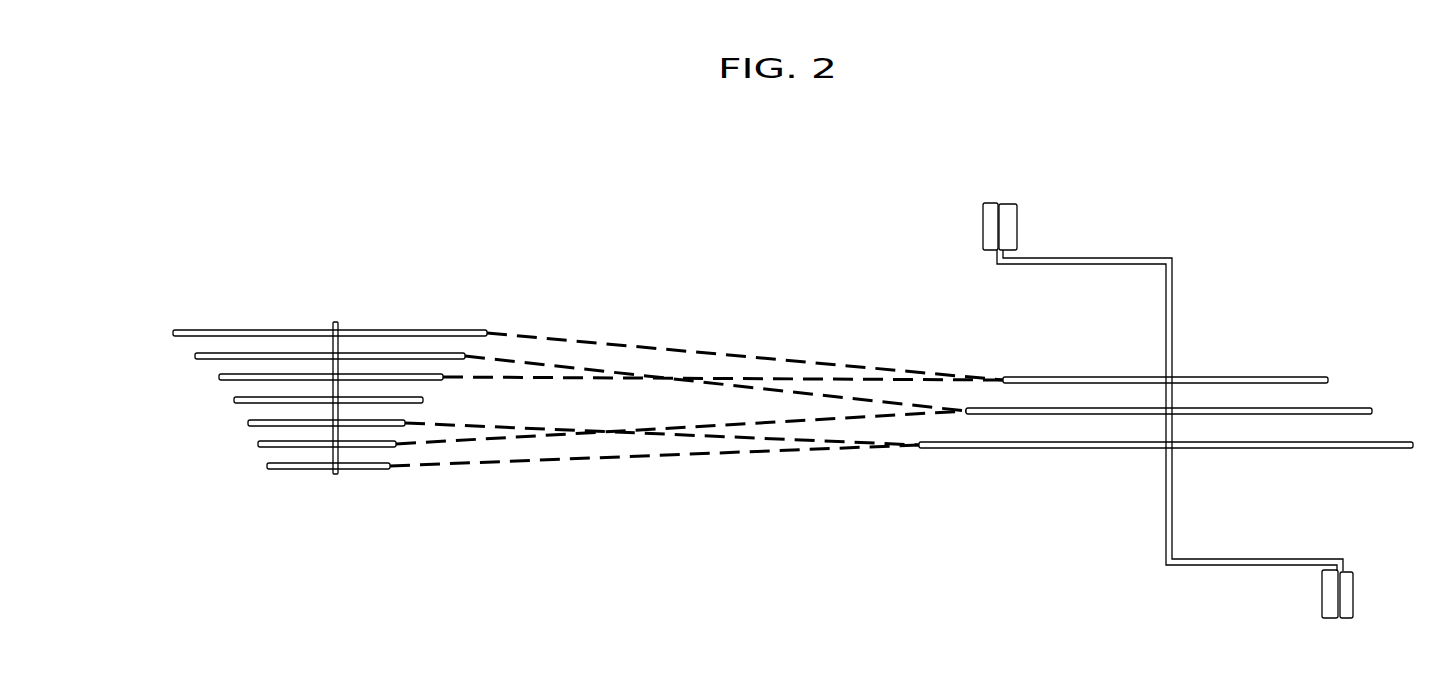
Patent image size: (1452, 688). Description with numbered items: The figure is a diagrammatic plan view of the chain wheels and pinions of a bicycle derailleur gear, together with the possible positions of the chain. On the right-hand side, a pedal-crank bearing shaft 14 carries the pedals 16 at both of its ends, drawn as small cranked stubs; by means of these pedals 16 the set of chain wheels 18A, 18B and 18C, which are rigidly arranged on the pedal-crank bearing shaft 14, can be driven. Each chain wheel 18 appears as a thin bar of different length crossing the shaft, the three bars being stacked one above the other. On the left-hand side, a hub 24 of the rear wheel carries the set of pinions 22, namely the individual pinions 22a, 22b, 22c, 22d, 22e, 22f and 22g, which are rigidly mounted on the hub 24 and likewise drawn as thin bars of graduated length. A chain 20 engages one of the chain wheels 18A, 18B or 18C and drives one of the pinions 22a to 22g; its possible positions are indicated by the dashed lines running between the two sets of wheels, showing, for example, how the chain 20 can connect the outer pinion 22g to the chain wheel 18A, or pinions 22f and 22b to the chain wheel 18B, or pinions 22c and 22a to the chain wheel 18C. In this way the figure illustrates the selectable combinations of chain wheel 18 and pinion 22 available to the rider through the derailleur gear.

The pedal-crank bearing shaft 14 is at (1173, 500).
The pedals 16 is at (1080, 257).
The chain wheel 18 is at (1047, 470).
The chain wheel 18A is at (1288, 377).
The chain wheel 18B is at (1343, 408).
The chain wheel 18C is at (1393, 442).
The chain 20 is at (657, 470).
The set of pinions 22 is at (266, 312).
The pinion 22a is at (267, 466).
The pinion 22b is at (258, 444).
The pinion 22c is at (248, 423).
The pinion 22d is at (234, 400).
The pinion 22e is at (219, 377).
The pinion 22f is at (195, 355).
The pinion 22g is at (173, 330).
The hub 24 is at (340, 452).